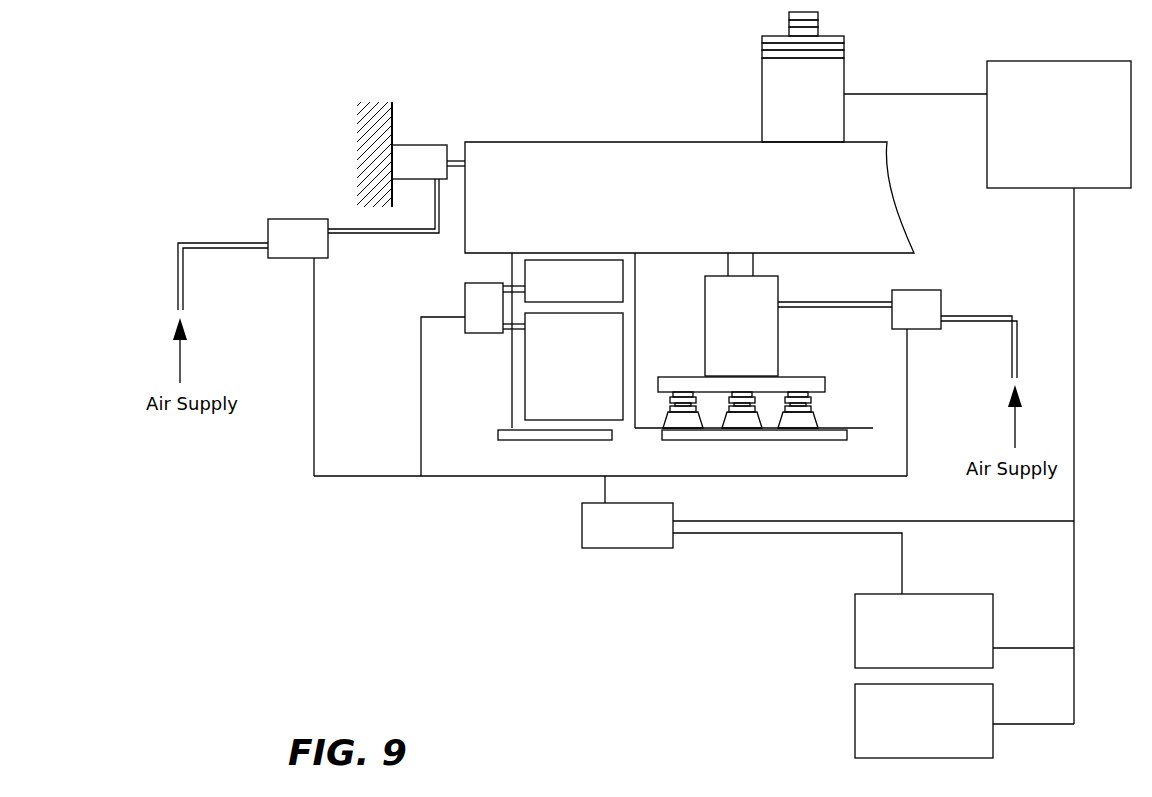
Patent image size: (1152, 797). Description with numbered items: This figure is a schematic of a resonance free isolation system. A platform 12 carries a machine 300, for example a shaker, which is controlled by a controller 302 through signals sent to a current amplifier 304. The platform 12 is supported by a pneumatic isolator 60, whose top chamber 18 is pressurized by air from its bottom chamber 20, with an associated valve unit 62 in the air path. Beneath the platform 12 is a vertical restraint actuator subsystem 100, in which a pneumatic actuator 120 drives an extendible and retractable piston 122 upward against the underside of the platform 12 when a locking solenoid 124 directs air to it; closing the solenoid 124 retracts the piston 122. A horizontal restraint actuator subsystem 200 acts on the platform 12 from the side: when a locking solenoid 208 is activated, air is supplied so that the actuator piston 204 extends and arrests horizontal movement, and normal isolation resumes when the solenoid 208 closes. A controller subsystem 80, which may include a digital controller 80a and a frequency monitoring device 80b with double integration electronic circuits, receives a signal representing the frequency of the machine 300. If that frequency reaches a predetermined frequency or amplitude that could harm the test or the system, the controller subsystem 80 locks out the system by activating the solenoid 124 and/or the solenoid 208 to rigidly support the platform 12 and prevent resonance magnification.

The platform 12 is at (535, 150).
The top chamber 18 is at (563, 292).
The bottom chamber 20 is at (563, 378).
The pneumatic isolator 60 is at (500, 366).
The valve unit 62 is at (473, 320).
The controller subsystem 80 is at (758, 638).
The digital controller 80a is at (610, 537).
The frequency monitoring device 80b is at (902, 642).
The vertical restraint actuator subsystem 100 is at (815, 300).
The pneumatic actuator 120 is at (726, 332).
The piston 122 is at (738, 264).
The locking solenoid 124 is at (900, 322).
The horizontal restraint actuator subsystem 200 is at (416, 122).
The actuator piston 204 is at (455, 158).
The locking solenoid 208 is at (282, 248).
The machine 300 is at (787, 110).
The controller 302 is at (904, 732).
The current amplifier 304 is at (1044, 135).